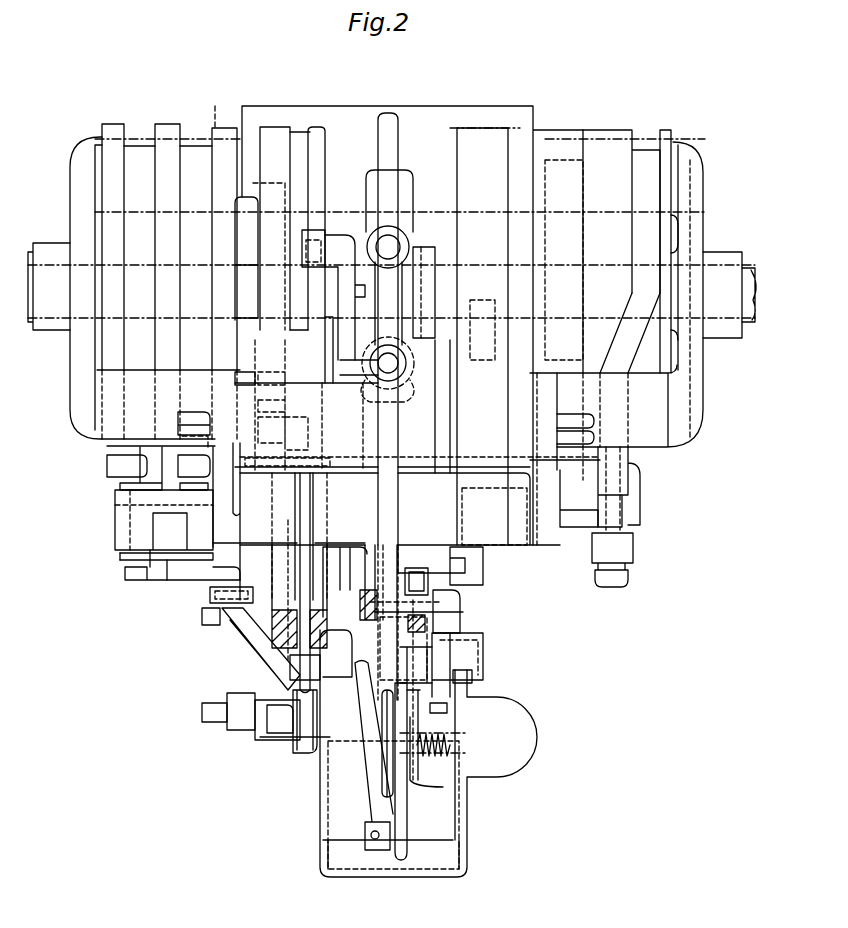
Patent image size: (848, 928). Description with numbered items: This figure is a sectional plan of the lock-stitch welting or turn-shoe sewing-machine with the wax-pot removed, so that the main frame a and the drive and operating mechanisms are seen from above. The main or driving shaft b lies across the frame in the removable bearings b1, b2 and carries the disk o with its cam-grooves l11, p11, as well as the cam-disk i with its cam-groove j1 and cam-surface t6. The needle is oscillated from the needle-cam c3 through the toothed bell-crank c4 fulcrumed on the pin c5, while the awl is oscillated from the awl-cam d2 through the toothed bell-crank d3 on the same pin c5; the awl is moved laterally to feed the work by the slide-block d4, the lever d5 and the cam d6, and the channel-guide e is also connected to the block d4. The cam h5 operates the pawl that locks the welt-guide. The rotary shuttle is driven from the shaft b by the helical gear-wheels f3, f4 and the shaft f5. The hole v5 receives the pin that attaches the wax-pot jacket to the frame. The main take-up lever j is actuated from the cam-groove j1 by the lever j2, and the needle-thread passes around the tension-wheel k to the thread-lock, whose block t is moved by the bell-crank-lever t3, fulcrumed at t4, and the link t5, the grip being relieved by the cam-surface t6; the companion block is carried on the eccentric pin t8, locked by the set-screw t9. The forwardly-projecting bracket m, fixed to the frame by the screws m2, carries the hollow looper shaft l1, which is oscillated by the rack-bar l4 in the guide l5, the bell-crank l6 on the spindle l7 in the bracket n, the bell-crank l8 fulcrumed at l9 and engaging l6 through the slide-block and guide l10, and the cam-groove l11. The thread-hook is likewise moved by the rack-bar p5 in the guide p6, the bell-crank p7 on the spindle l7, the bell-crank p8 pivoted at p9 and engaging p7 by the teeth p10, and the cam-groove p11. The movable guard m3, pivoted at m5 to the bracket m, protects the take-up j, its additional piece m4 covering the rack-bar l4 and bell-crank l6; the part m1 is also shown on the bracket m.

The main frame a is at (402, 116).
The main or driving shaft b is at (742, 340).
The removable bearing b1 is at (45, 327).
The removable bearing b2 is at (712, 254).
The disk o is at (112, 124).
The cam-groove l11 is at (153, 247).
The cam-groove p11 is at (209, 249).
The cam-groove j1 is at (268, 182).
The lever j2 is at (300, 757).
The cam-disk i is at (325, 152).
The cam-surface t6 is at (318, 188).
The bell-crank-lever t3 is at (337, 243).
The cam h5 is at (300, 323).
The hole v5 is at (390, 240).
The helical gear-wheel f3 is at (425, 252).
The needle-cam c3 is at (462, 210).
The toothed bell-crank c4 is at (448, 367).
The helical gear-wheel f4 is at (410, 372).
The shaft f5 is at (404, 387).
The fulcrum t4 is at (345, 372).
The awl-cam d2 is at (538, 360).
The toothed bell-crank d3 is at (540, 381).
The cam d6 is at (613, 347).
The slide-block d4 is at (644, 502).
The lever d5 is at (623, 547).
The pin c5 is at (560, 528).
The bell-crank p7 is at (318, 466).
The bell-crank p8 is at (158, 433).
The teeth p10 is at (239, 450).
The bell-crank l8 is at (108, 472).
The fulcrum l9 is at (117, 514).
The bracket n is at (117, 538).
The pivot p9 is at (195, 549).
The slide-block and guide l10 is at (210, 596).
The connecting rod or link t5 is at (362, 553).
The bell-crank l6 is at (270, 650).
The spindle l7 is at (290, 663).
The rack-bar p5 is at (203, 627).
The guide p6 is at (226, 642).
The screws m2 is at (412, 558).
The channel-guide e is at (474, 571).
The arm m1 is at (454, 612).
The pivot m5 is at (485, 661).
The shaft l1 is at (405, 671).
The bracket m is at (487, 621).
The movable guard m3 is at (388, 876).
The main take-up lever j is at (366, 790).
The needle-thread tension-wheel k is at (392, 790).
The block t is at (423, 693).
The pin t8 is at (473, 683).
The set-screw t9 is at (448, 709).
The rack-bar l4 is at (213, 718).
The guide l5 is at (242, 726).
The additional piece m4 is at (277, 738).